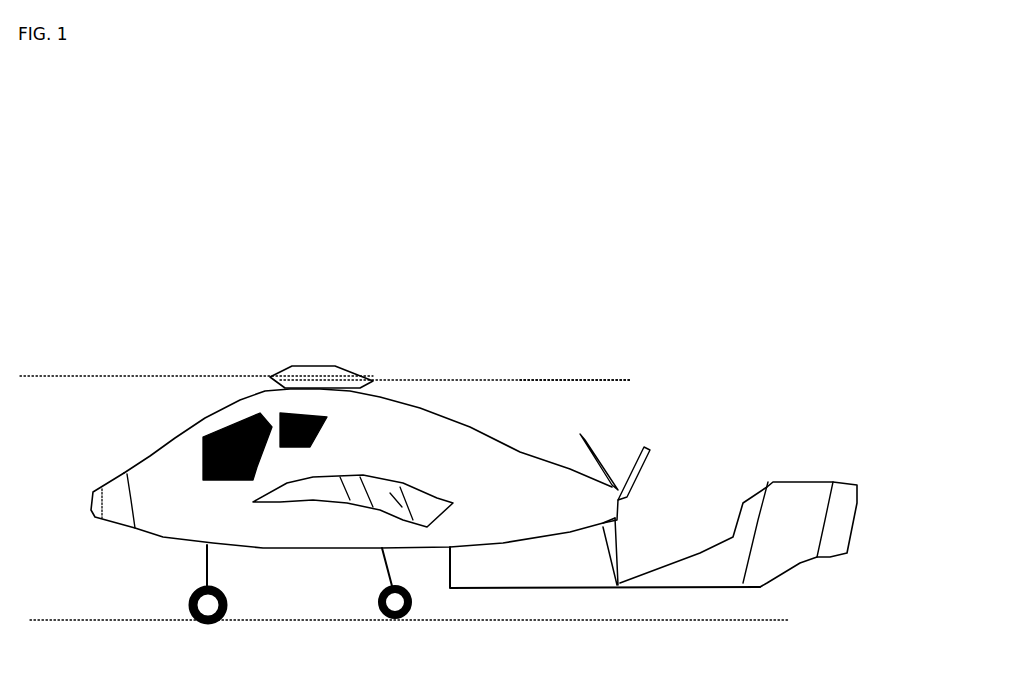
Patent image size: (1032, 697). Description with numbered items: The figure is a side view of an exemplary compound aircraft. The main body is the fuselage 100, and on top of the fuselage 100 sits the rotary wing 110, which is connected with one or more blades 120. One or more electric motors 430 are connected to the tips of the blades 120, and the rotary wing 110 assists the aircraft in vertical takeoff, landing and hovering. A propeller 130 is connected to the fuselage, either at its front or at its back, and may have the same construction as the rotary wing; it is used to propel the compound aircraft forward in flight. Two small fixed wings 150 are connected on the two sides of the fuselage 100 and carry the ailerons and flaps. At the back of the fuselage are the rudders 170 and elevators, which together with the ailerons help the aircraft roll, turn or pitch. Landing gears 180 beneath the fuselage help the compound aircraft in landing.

The fuselage 100 is at (157, 448).
The rotary wing 110 is at (341, 363).
The blades 120 is at (165, 372).
The propeller 130 is at (654, 447).
The fixed wings 150 is at (415, 492).
The rudders 170 is at (859, 484).
The landing gears 180 is at (375, 607).
The electric motors 430 is at (631, 379).